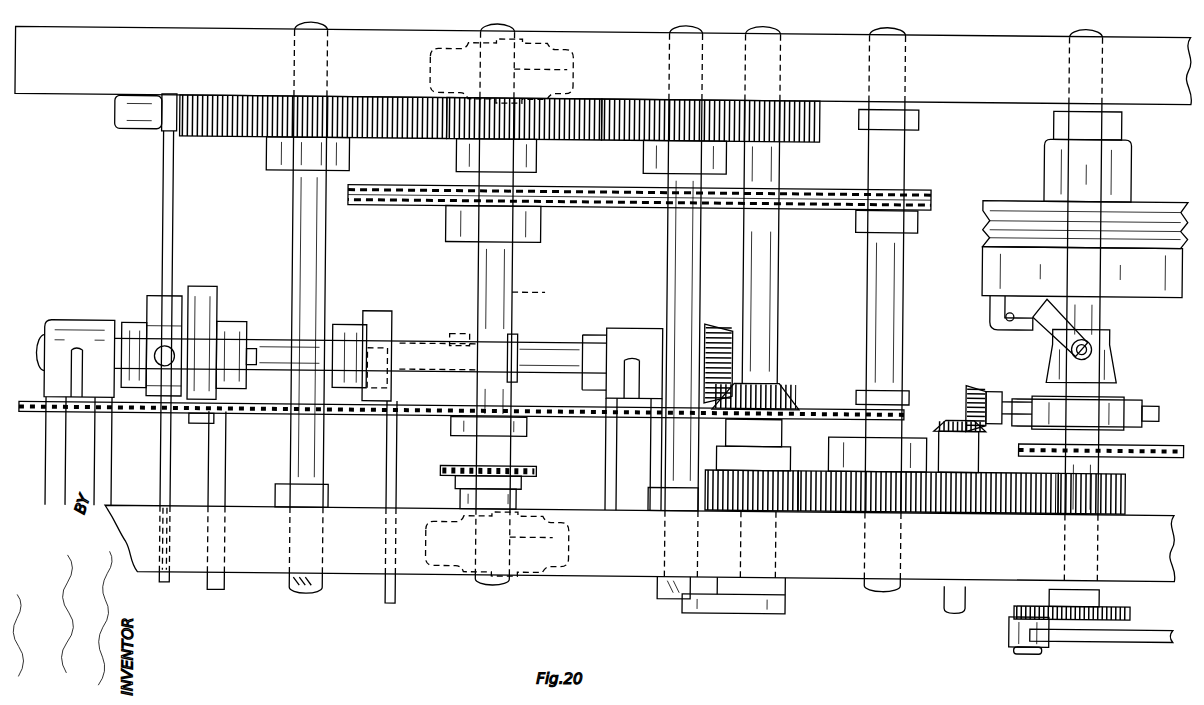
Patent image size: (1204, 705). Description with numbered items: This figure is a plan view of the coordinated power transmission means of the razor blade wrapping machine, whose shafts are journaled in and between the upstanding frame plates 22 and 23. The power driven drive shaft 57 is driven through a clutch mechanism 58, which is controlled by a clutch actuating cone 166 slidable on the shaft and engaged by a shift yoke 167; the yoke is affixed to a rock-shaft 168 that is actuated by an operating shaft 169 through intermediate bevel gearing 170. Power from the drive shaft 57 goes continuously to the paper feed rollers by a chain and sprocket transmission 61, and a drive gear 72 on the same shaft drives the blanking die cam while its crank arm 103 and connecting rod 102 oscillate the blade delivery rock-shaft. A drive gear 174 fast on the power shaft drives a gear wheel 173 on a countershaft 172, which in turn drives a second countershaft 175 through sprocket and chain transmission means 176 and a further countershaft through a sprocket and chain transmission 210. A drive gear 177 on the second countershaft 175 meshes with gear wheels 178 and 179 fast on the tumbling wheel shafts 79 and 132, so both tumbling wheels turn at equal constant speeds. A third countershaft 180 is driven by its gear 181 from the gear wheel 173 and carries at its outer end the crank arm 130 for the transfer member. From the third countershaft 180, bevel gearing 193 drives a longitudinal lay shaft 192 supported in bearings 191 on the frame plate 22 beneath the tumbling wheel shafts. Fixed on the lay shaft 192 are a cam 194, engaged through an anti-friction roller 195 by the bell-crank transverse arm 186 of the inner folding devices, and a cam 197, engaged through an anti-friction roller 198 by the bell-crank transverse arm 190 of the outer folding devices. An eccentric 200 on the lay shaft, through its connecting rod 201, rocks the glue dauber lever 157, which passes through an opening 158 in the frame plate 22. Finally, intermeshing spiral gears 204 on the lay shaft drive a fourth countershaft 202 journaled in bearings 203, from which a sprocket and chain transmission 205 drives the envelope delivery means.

The frame plate 23 is at (806, 43).
The frame plate 22 is at (823, 568).
The gear wheel 179 is at (348, 125).
The drive gear 177 is at (523, 125).
The gear wheel 178 is at (663, 123).
The sprocket and chain transmission means 176 is at (599, 200).
The sprocket and chain transmission 210 is at (355, 418).
The tumbling wheel shaft 132 is at (317, 268).
The second countershaft 175 is at (498, 278).
The bearings 203 is at (554, 44).
The fourth countershaft 202 is at (566, 71).
The tumbling wheel shaft 79 is at (672, 272).
The third countershaft 180 is at (771, 272).
The bevel gearing 193 is at (742, 360).
The gear 181 is at (802, 509).
The gear wheel 173 is at (870, 490).
The drive gear 174 is at (1126, 491).
The countershaft 172 is at (891, 318).
The rock-shaft 168 is at (967, 395).
The bevel gearing 170 is at (978, 390).
The drive shaft 57 is at (1100, 312).
The clutch mechanism 58 is at (1004, 317).
The clutch actuating cone 166 is at (1112, 362).
The shift yoke 167 is at (1134, 396).
The chain and sprocket transmission 61 is at (1170, 441).
The drive gear 72 is at (1134, 608).
The connecting rod 102 is at (1093, 637).
The crank arm 103 is at (1038, 650).
The operating shaft 169 is at (968, 596).
The crank arm 130 is at (720, 601).
The lever 157 is at (166, 466).
The opening 158 is at (168, 539).
The lay shaft 192 is at (267, 338).
The bearings 191 is at (92, 327).
The connecting rod 201 is at (146, 330).
The eccentric 200 is at (156, 330).
The cam 197 is at (218, 282).
The anti-friction roller 198 is at (228, 331).
The transverse arm 190 is at (223, 474).
The anti-friction roller 195 is at (384, 346).
The cam 194 is at (380, 318).
The spiral gears 204 is at (460, 333).
The transverse arm 186 is at (399, 460).
The sprocket and chain transmission 205 is at (518, 470).